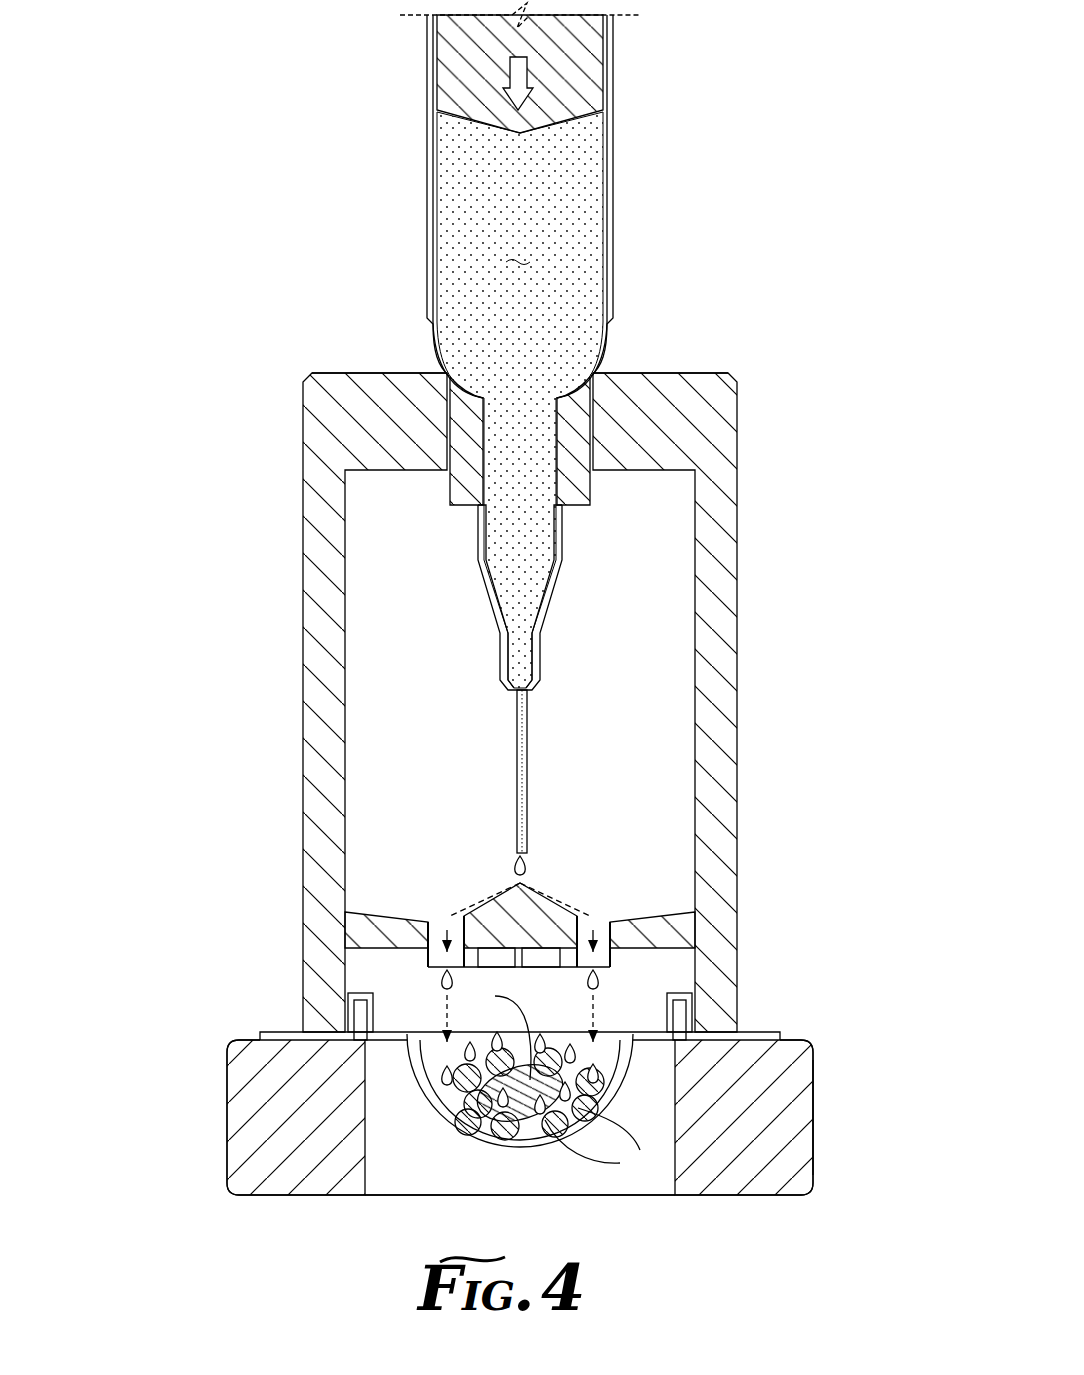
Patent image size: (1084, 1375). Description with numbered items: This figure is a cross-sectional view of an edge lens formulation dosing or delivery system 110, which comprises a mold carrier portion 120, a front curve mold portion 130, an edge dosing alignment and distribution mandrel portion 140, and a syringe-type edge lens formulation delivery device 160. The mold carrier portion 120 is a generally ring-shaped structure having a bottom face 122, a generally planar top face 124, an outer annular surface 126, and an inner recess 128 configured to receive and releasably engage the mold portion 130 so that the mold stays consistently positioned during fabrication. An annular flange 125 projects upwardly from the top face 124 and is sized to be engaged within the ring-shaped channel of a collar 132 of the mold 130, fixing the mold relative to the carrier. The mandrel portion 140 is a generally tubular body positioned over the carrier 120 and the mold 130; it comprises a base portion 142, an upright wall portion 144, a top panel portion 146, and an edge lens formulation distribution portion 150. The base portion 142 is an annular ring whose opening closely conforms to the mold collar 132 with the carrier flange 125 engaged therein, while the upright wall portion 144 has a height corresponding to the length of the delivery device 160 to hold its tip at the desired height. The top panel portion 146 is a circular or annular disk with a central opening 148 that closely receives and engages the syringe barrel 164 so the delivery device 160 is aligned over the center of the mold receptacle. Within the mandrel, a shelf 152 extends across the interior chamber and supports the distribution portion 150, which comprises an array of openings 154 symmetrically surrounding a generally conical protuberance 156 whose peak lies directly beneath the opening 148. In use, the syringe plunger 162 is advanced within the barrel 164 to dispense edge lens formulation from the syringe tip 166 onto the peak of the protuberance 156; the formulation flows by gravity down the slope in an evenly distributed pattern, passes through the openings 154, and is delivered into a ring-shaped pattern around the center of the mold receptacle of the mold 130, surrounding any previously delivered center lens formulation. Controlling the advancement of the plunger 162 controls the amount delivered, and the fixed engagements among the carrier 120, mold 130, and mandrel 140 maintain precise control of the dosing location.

The edge lens formulation dosing system 110 is at (188, 262).
The mold carrier portion 120 is at (184, 1114).
The bottom face 122 is at (757, 1197).
The top face 124 is at (790, 1038).
The annular flange 125 is at (362, 1020).
The outer annular surface 126 is at (815, 1103).
The inner recess 128 is at (663, 1183).
The mold portion 130 is at (442, 1115).
The collar 132 is at (678, 990).
The edge dosing alignment and distribution mandrel portion 140 is at (236, 668).
The base portion 142 is at (320, 1005).
The upright wall portion 144 is at (722, 652).
The top panel portion 146 is at (668, 372).
The opening 148 is at (443, 480).
The edge lens formulation distribution portion 150 is at (468, 868).
The shelf 152 is at (662, 930).
The openings 154 is at (440, 935).
The conical protuberance 156 is at (538, 918).
The edge lens formulation delivery device 160 is at (706, 186).
The syringe plunger 162 is at (570, 80).
The syringe barrel 164 is at (430, 173).
The syringe tip 166 is at (519, 817).